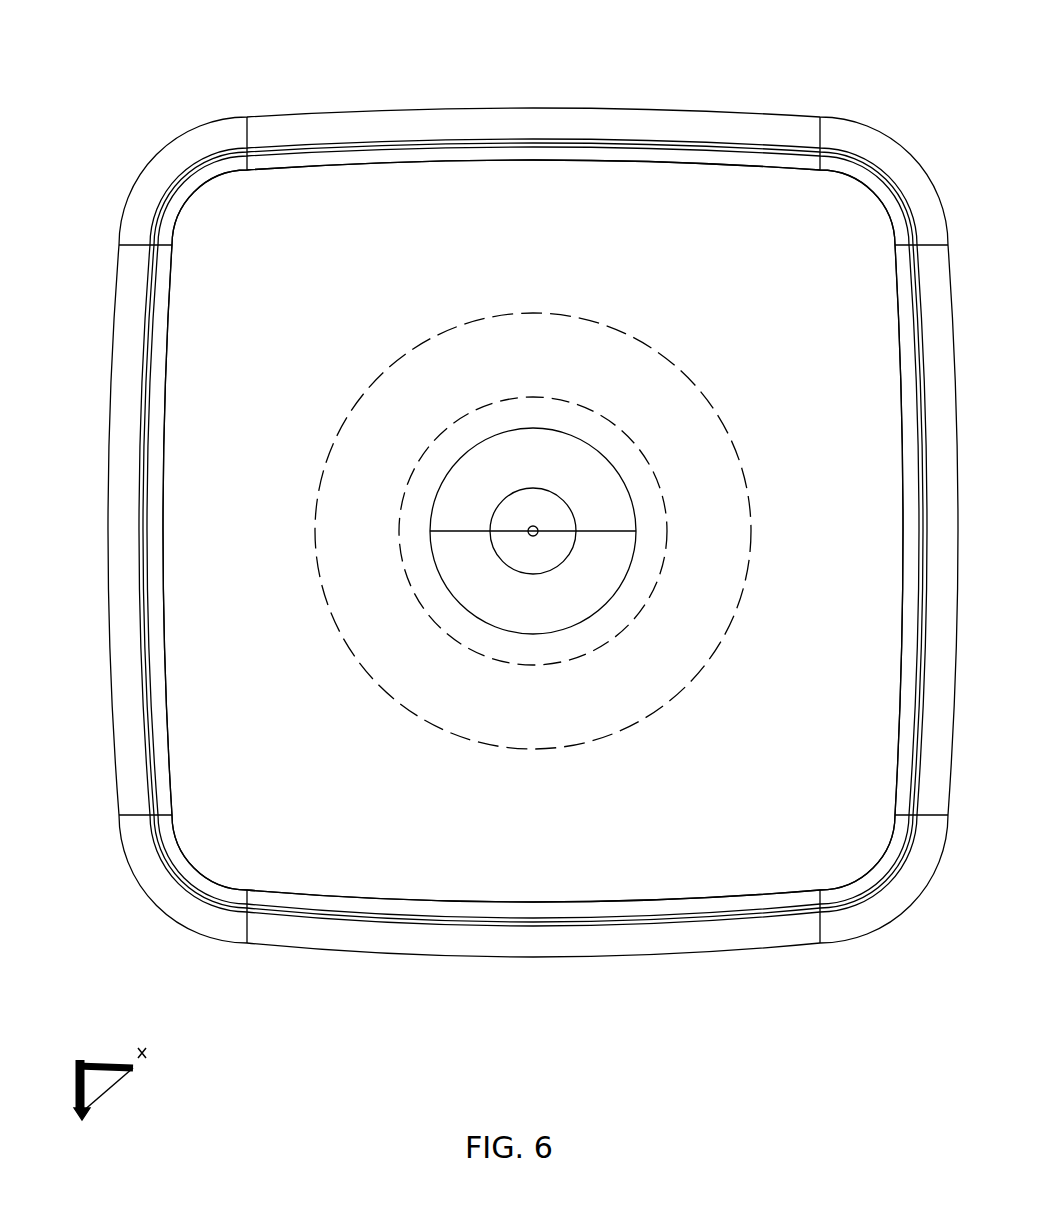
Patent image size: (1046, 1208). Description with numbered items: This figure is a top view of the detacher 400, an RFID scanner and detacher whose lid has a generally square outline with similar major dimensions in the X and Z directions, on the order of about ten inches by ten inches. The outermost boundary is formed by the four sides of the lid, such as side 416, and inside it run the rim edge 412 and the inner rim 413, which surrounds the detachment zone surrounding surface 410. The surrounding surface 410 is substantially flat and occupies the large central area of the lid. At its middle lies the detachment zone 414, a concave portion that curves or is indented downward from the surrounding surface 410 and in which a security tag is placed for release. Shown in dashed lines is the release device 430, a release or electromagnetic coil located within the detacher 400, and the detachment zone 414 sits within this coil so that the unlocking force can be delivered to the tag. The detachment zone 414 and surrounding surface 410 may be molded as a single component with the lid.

The detacher 400 is at (830, 1074).
The surrounding surface 410 is at (414, 218).
The rim edge 412 is at (286, 152).
The inner rim 413 is at (760, 160).
The detachment zone 414 is at (521, 665).
The side 416 is at (605, 115).
The release device 430 is at (360, 530).